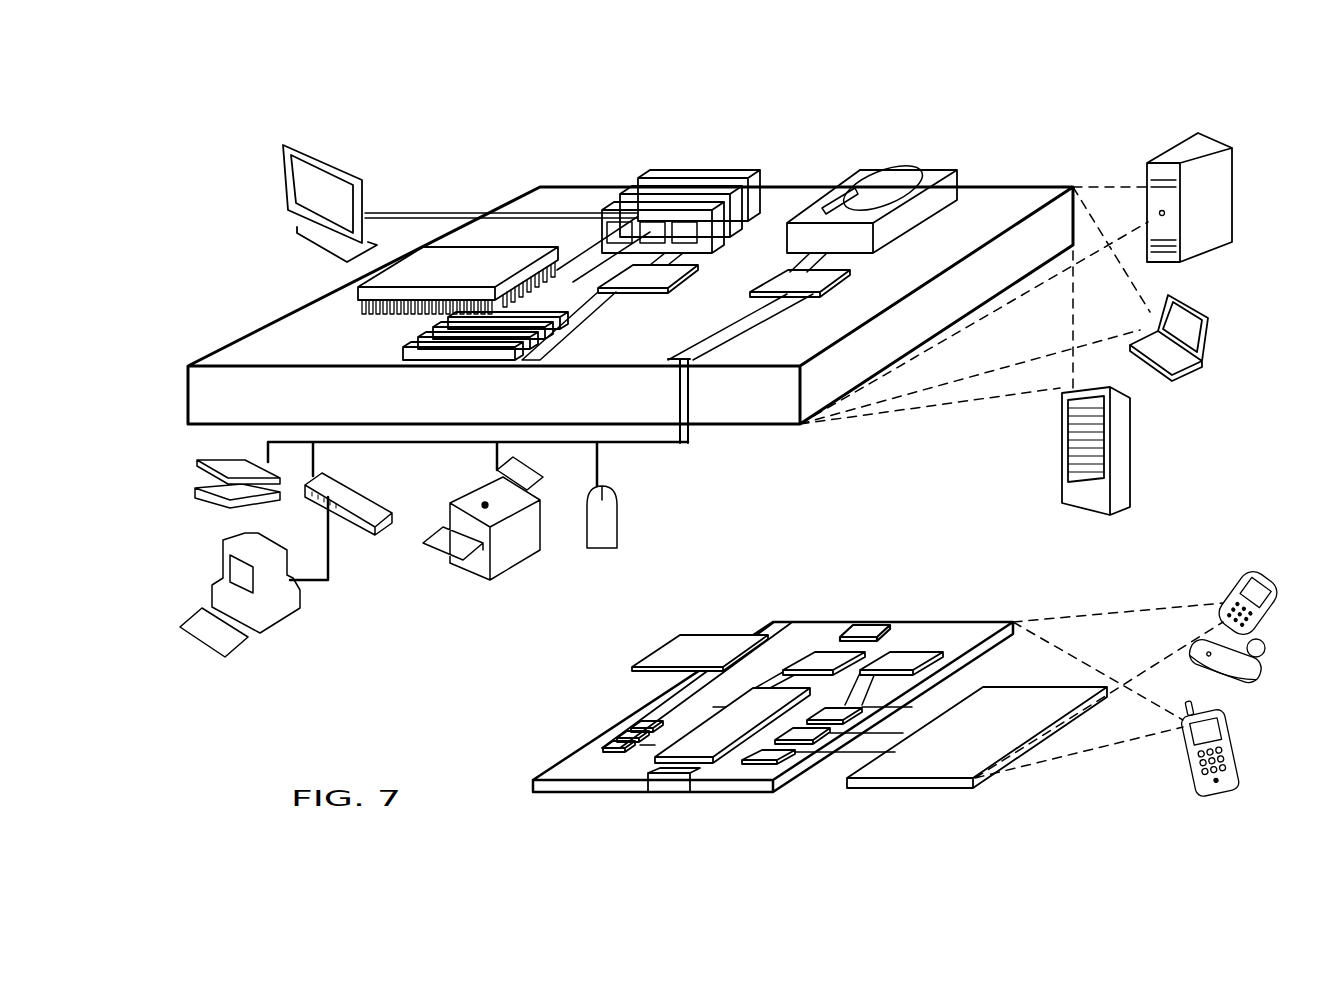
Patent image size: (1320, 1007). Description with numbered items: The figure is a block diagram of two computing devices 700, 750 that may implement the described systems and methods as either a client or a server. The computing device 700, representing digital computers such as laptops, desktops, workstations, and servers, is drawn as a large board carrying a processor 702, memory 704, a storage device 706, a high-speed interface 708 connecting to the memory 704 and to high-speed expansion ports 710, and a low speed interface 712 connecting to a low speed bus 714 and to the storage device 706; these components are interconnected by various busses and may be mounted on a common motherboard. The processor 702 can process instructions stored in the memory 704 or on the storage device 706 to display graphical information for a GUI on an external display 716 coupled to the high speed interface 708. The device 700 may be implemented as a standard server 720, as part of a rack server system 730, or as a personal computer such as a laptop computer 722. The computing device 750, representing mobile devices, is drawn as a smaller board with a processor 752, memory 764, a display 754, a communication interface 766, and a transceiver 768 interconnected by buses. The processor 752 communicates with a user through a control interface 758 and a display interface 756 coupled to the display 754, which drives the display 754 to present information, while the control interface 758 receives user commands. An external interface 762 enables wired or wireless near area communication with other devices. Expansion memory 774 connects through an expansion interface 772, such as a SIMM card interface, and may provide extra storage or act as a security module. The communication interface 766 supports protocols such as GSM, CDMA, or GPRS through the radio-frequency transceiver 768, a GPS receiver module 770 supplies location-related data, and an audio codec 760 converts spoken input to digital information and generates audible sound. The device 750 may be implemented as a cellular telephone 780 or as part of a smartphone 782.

The computing device 700 is at (512, 162).
The processor 702 is at (357, 298).
The memory 704 is at (660, 178).
The storage device 706 is at (873, 175).
The high-speed interface 708 is at (652, 277).
The high-speed expansion ports 710 is at (1178, 380).
The low speed interface 712 is at (790, 284).
The low speed bus 714 is at (690, 370).
The display 716 is at (296, 146).
The standard server 720 is at (1148, 150).
The laptop computer 722 is at (420, 342).
The server rack 730 is at (1062, 490).
The computing device 750 is at (606, 677).
The processor 752 is at (712, 742).
The display 754 is at (950, 752).
The display interface 756 is at (765, 756).
The control interface 758 is at (798, 736).
The audio codec 760 is at (832, 716).
The external interface 762 is at (668, 780).
The memory 764 is at (630, 737).
The communication interface 766 is at (815, 656).
The transceiver 768 is at (905, 658).
The GPS receiver module 770 is at (875, 628).
The expansion interface 772 is at (757, 632).
The expansion memory 774 is at (668, 637).
The cellular telephone 780 is at (1224, 580).
The smartphone 782 is at (1178, 750).